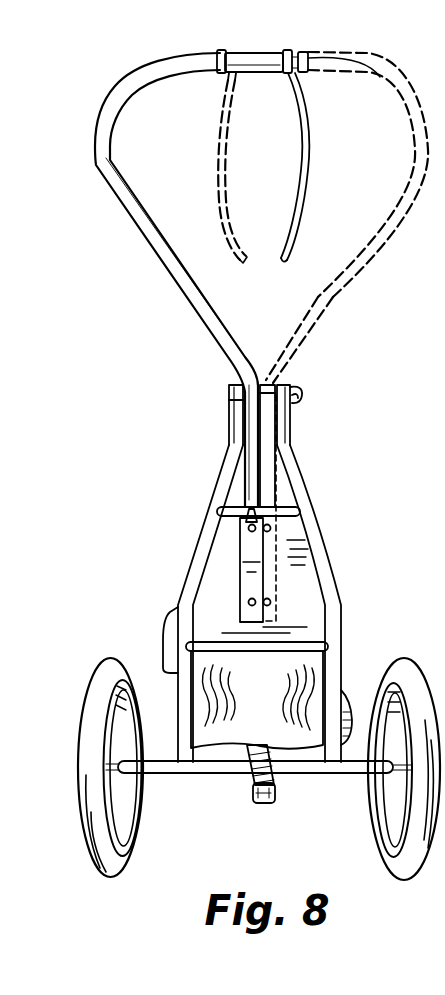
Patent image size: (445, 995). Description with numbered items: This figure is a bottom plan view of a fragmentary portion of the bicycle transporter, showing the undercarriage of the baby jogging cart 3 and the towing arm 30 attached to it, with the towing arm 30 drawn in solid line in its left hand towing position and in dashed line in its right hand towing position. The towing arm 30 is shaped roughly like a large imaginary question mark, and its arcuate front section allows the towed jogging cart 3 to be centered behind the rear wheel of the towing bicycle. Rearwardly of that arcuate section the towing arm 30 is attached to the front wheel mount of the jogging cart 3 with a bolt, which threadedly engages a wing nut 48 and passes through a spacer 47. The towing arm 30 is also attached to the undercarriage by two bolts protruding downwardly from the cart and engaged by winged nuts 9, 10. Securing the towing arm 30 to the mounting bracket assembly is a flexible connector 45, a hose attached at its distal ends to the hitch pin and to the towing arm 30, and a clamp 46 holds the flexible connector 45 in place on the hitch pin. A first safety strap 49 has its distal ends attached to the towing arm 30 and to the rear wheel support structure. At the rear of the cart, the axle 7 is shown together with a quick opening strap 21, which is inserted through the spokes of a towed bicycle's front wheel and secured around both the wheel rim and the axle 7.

The baby jogging cart 3 is at (141, 600).
The axle 7 is at (197, 768).
The winged nut 9 is at (258, 527).
The winged nut 10 is at (260, 598).
The quick opening strap 21 is at (272, 778).
The towing arm 30 is at (152, 250).
The flexible connector 45 is at (255, 65).
The clamp 46 is at (380, 77).
The spacer 47 is at (270, 380).
The wing nut 48 is at (302, 390).
The first safety strap 49 is at (297, 193).